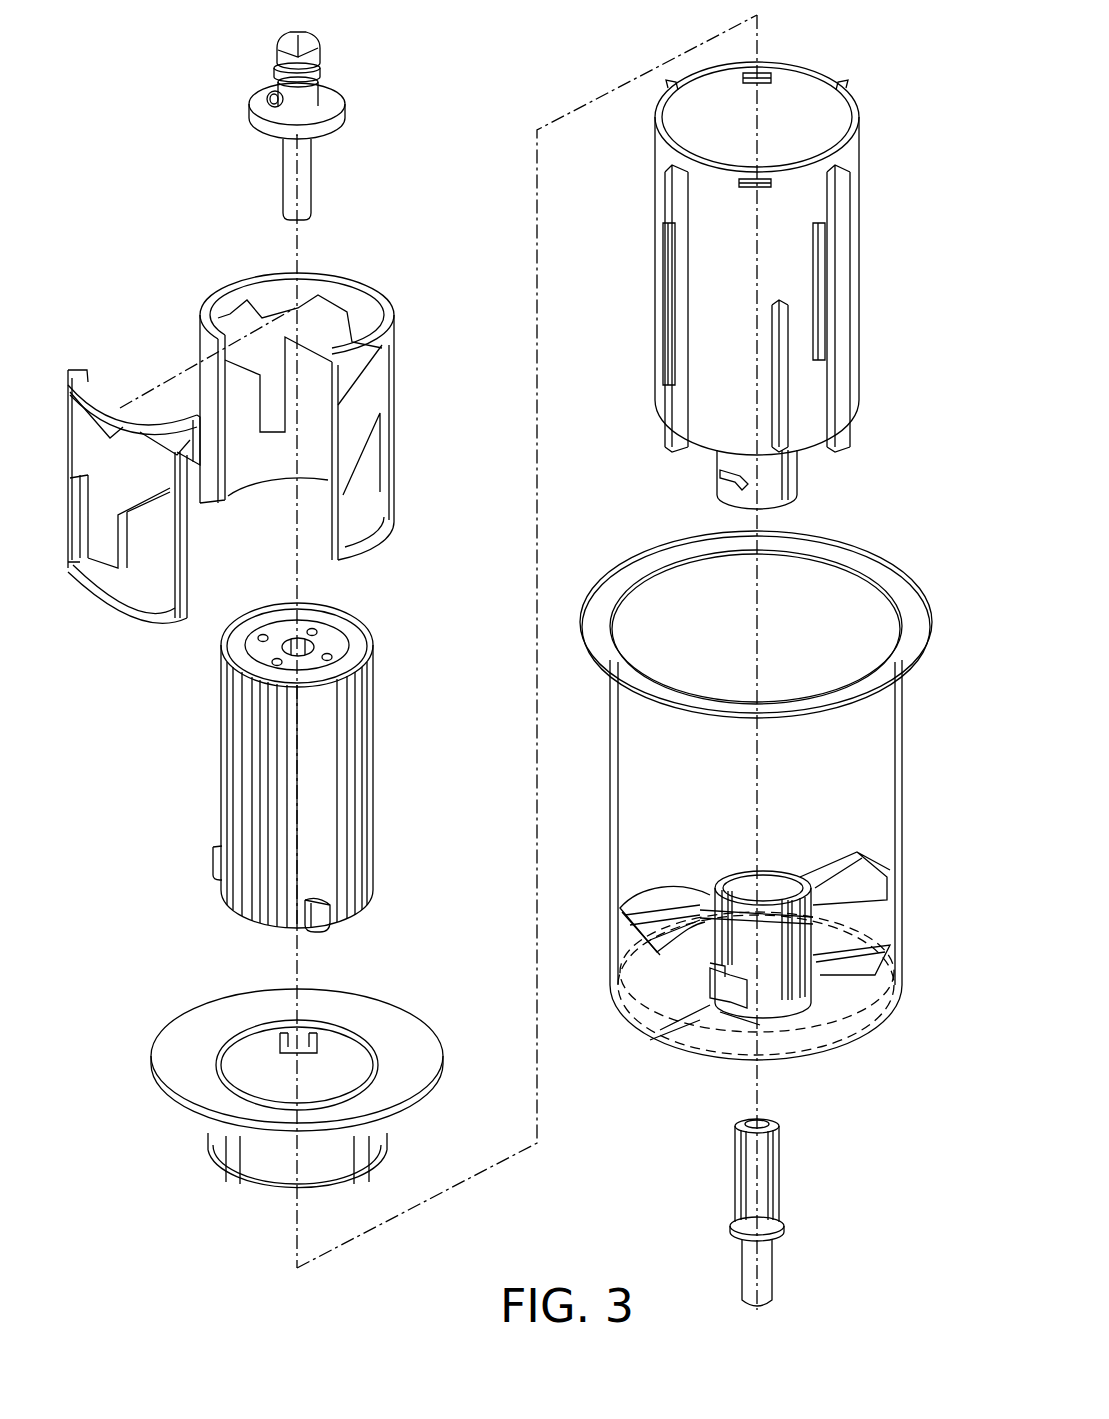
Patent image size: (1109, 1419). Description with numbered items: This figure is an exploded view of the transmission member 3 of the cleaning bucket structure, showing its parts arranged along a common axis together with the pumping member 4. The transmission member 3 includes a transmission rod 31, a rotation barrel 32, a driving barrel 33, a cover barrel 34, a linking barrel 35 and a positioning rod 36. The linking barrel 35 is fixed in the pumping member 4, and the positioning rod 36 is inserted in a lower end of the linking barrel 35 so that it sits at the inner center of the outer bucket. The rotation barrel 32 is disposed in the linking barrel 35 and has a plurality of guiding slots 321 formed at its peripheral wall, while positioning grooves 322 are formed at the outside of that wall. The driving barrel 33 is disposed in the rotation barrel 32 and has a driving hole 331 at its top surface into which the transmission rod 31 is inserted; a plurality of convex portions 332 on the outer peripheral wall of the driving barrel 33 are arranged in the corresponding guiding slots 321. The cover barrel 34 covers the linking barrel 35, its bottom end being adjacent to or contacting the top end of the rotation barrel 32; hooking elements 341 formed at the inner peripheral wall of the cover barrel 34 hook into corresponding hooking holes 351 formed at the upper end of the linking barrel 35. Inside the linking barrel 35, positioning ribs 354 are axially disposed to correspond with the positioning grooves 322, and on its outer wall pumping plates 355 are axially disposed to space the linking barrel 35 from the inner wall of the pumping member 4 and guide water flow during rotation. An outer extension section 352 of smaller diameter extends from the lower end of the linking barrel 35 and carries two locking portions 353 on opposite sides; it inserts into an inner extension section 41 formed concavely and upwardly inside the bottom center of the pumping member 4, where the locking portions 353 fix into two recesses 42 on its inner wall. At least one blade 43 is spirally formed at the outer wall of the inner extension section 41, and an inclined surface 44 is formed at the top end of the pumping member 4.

The transmission member 3 is at (188, 98).
The transmission rod 31 is at (355, 105).
The rotation barrel 32 is at (208, 298).
The guiding slots 321 is at (320, 315).
The positioning grooves 322 is at (188, 542).
The driving barrel 33 is at (216, 768).
The driving hole 331 is at (320, 634).
The convex portions 332 is at (210, 850).
The cover barrel 34 is at (212, 1147).
The hooking elements 341 is at (280, 1043).
The linking barrel 35 is at (870, 138).
The hooking holes 351 is at (764, 72).
The outer extension section 352 is at (763, 465).
The locking portions 353 is at (720, 489).
The positioning ribs 354 is at (787, 372).
The pumping plates 355 is at (845, 268).
The positioning rod 36 is at (792, 1190).
The pumping member 4 is at (906, 953).
The inner extension section 41 is at (740, 868).
The recesses 42 is at (730, 998).
The blade 43 is at (870, 1037).
The inclined surface 44 is at (877, 577).